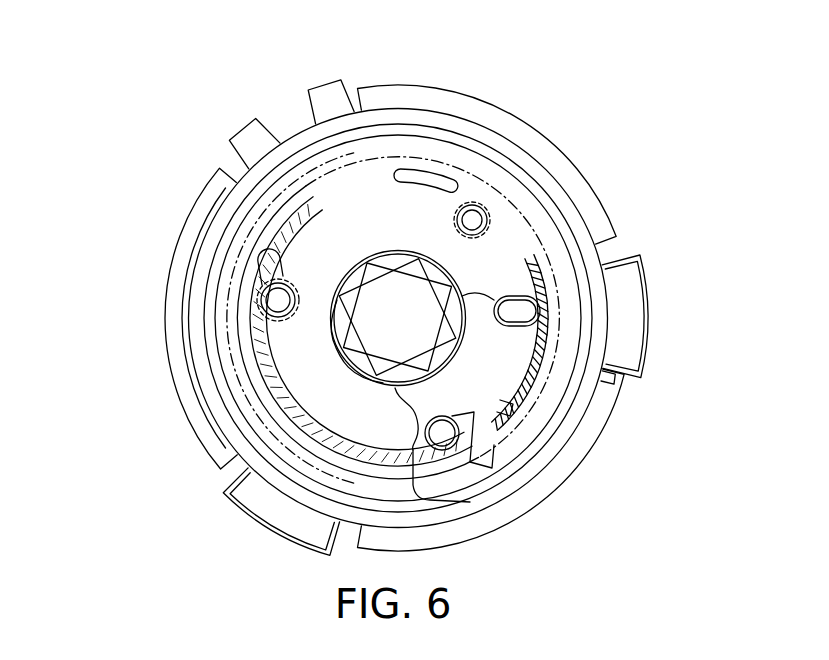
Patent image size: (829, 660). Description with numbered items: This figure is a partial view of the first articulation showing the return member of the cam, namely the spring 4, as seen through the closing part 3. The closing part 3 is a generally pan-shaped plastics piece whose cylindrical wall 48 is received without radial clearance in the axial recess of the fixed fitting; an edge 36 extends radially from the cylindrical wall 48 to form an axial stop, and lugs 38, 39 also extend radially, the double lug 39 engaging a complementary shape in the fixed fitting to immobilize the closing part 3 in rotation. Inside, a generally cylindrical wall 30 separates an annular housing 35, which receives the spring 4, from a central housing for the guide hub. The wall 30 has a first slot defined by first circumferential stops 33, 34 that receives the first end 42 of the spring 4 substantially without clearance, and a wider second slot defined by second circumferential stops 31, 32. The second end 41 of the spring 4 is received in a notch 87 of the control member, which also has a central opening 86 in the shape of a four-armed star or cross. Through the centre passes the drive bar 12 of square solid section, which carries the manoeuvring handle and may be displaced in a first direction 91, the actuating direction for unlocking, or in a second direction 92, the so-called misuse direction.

The closing part 3 is at (544, 109).
The spring 4 is at (250, 227).
The drive bar 12 is at (398, 320).
The wall 30 is at (265, 345).
The second circumferential stop 31 is at (427, 177).
The second circumferential stop 32 is at (263, 257).
The first circumferential stop 33 is at (450, 425).
The first circumferential stop 34 is at (503, 423).
The annular housing 35 is at (545, 368).
The edge 36 is at (580, 467).
The lug 38 is at (628, 320).
The double lug 39 is at (265, 126).
The second end 41 is at (518, 307).
The first end 42 is at (492, 427).
The cylindrical wall 48 is at (608, 384).
The central opening 86 is at (350, 370).
The notch 87 is at (532, 295).
The first direction 91 is at (473, 33).
The second direction 92 is at (328, 33).